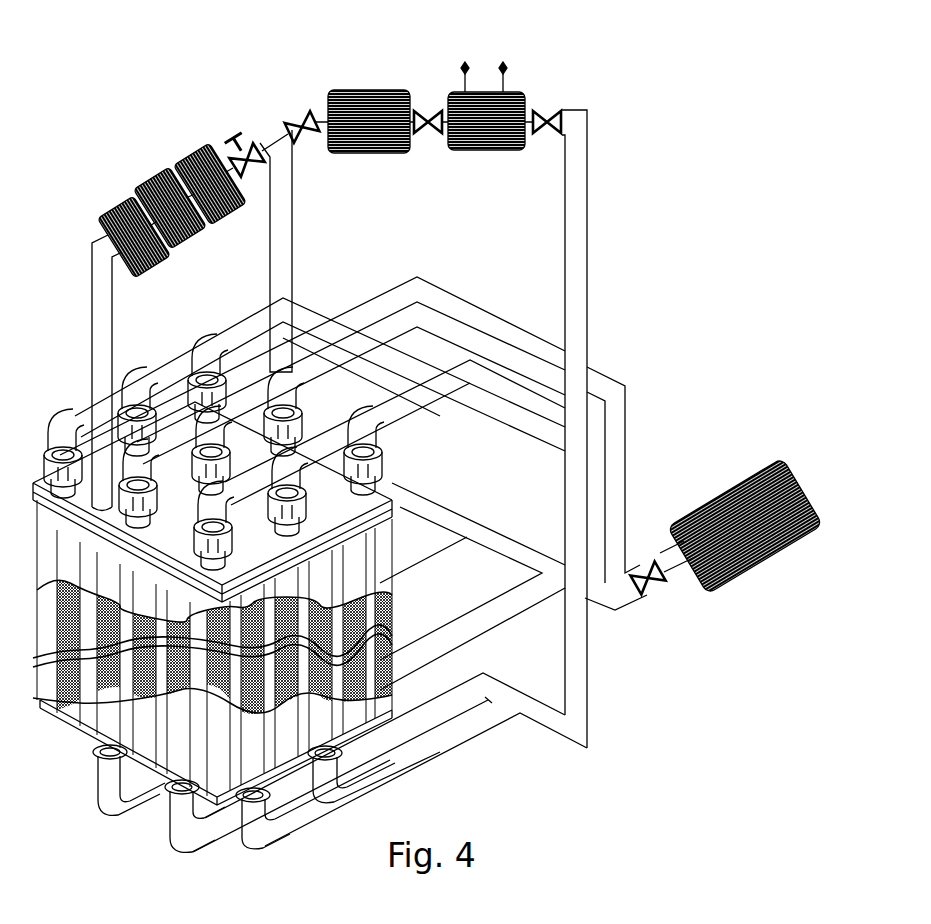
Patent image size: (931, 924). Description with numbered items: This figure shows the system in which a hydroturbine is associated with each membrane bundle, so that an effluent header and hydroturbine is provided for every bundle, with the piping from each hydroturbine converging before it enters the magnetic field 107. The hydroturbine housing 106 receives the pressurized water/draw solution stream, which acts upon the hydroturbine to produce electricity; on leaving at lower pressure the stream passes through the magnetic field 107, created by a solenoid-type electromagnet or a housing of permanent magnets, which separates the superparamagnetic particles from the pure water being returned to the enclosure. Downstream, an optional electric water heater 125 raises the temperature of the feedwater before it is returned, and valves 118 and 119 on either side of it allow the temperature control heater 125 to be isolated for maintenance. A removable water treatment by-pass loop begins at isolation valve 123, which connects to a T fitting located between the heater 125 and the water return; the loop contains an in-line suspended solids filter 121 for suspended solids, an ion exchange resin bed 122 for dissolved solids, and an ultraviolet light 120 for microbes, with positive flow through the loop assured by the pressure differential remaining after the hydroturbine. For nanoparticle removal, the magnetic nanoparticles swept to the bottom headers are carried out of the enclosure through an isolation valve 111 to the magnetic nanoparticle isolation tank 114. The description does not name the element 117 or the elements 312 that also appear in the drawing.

The hydroturbine housing 106 is at (232, 826).
The magnetic field 107 is at (487, 88).
The isolation valve 111 is at (648, 604).
The magnetic nanoparticle isolation tank 114 is at (710, 497).
The valve 117 is at (547, 106).
The valve 118 is at (427, 106).
The isolation valve 119 is at (291, 116).
The ultraviolet (UV) light 120 is at (105, 212).
The in-line suspended solids filter 121 is at (188, 153).
The ion exchange resin bed 122 is at (148, 178).
The isolation valve 123 is at (237, 140).
The electric water heater 125 is at (380, 87).
The tube section 312 is at (385, 560).